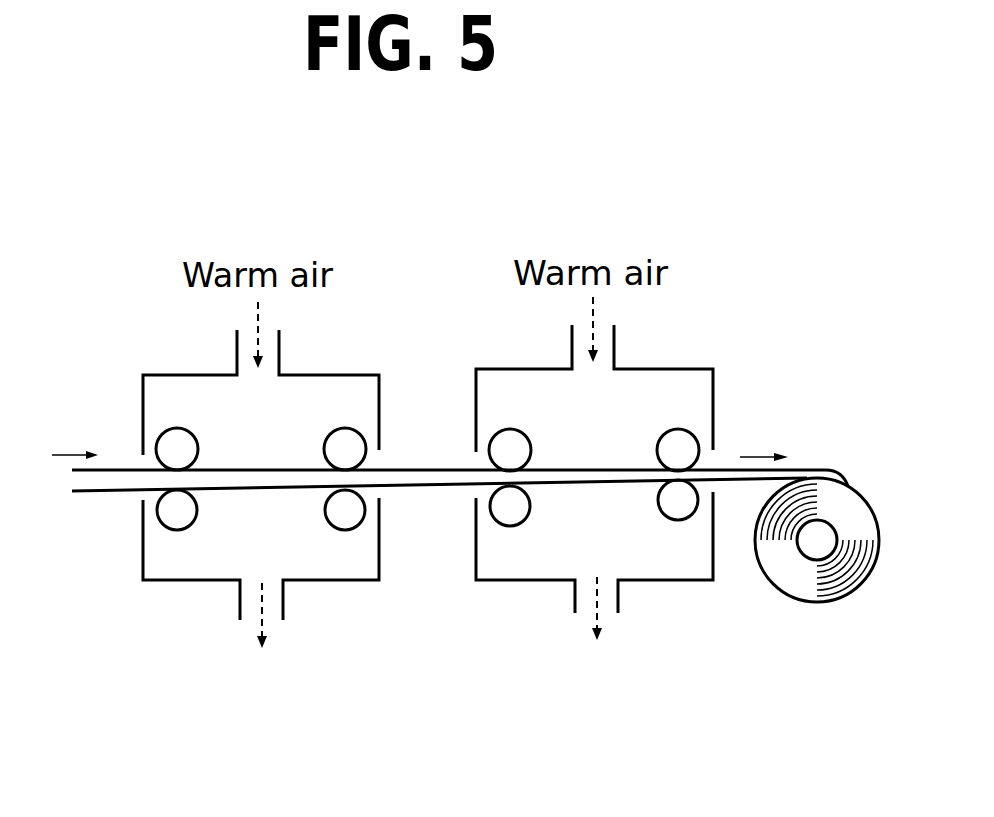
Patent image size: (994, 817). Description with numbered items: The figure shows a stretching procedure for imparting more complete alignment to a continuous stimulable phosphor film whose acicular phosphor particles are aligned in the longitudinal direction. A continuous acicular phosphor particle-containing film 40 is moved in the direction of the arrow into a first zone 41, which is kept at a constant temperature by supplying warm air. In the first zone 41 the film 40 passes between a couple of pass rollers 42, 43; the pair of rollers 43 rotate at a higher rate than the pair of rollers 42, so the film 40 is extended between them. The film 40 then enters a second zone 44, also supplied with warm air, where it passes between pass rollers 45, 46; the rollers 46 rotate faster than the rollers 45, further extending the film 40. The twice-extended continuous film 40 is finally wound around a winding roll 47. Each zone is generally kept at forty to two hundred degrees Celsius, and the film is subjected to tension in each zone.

The continuous acicular phosphor particle-containing film 40 is at (100, 492).
The first zone 41 is at (166, 373).
The pass rollers 42 is at (175, 531).
The pass rollers 43 is at (345, 531).
The second zone 44 is at (493, 367).
The pass rollers 45 is at (510, 527).
The pass rollers 46 is at (678, 521).
The winding roll 47 is at (820, 603).